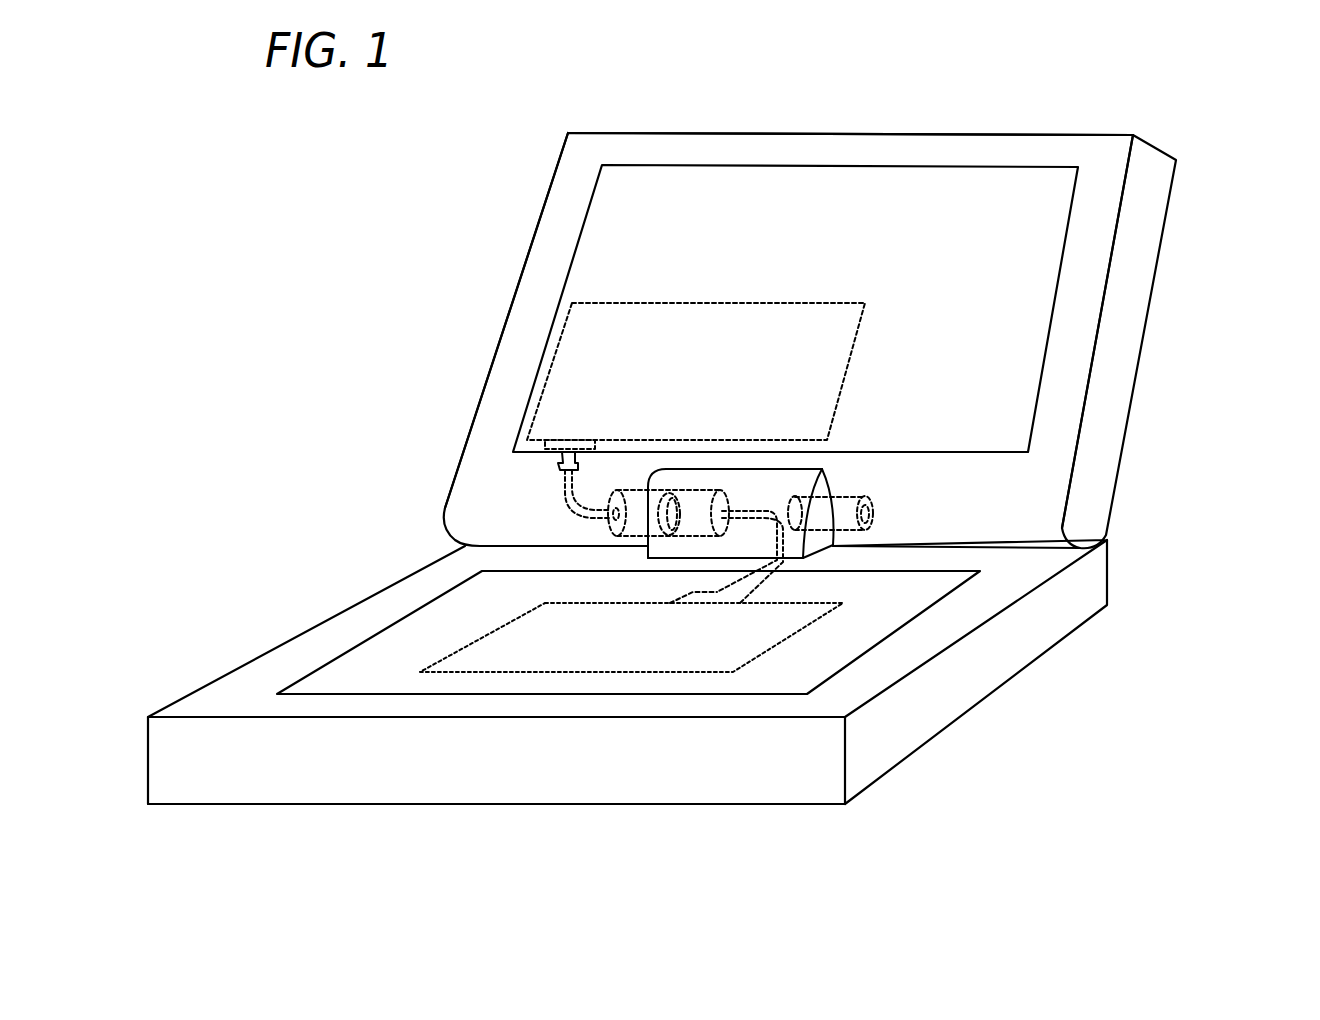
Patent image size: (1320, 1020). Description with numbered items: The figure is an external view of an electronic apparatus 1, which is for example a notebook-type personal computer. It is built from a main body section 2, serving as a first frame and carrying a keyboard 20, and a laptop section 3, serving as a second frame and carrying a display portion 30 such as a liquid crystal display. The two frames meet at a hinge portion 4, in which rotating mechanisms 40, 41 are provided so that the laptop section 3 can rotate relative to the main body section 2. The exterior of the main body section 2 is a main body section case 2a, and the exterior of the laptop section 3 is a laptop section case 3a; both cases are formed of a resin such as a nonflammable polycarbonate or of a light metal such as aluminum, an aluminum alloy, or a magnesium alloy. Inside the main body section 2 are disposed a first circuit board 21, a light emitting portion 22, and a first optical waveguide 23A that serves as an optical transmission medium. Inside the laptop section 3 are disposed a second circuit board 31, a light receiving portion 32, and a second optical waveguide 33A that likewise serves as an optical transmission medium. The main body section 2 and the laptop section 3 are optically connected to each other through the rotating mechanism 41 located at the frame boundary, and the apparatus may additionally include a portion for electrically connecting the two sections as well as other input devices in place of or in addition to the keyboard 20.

The electronic apparatus 1 is at (1090, 108).
The main body section 2 is at (955, 735).
The main body section case 2a is at (793, 793).
The laptop section 3 is at (1150, 360).
The laptop section case 3a is at (573, 190).
The hinge portion 4 is at (772, 483).
The keyboard 20 is at (375, 648).
The first circuit board 21 is at (788, 640).
The light emitting portion 22 is at (763, 593).
The first optical waveguide 23A is at (770, 563).
The display portion 30 is at (1047, 262).
The second circuit board 31 is at (542, 355).
The light receiving portion 32 is at (545, 447).
The second optical waveguide 33A is at (557, 490).
The rotating mechanism 40 is at (872, 515).
The rotating mechanism 41 is at (607, 527).